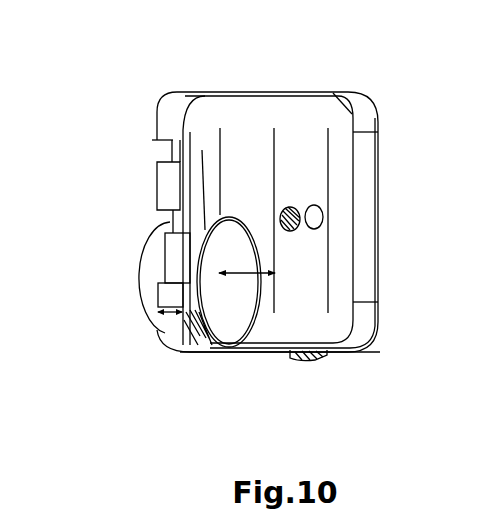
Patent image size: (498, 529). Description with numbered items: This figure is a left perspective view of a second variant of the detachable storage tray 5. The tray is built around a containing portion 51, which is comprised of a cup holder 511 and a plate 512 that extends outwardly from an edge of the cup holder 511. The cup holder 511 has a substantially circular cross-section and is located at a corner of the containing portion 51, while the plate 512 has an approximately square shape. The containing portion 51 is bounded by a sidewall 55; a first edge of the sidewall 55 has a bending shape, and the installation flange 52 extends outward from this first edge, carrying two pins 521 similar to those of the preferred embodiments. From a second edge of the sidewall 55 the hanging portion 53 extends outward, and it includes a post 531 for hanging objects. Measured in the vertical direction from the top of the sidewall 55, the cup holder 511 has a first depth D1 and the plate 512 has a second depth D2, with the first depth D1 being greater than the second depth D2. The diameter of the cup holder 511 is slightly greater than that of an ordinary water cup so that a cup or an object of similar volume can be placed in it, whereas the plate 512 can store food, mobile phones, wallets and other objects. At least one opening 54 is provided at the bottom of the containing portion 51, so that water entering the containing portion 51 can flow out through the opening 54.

The detachable storage tray 5 is at (404, 86).
The containing portion 51 is at (170, 110).
The cup holder 511 is at (208, 297).
The plate 512 is at (253, 138).
The installation flange 52 is at (197, 219).
The pins 521 is at (173, 253).
The hanging portion 53 is at (286, 352).
The post 531 is at (305, 358).
The opening 54 is at (310, 218).
The sidewall 55 is at (153, 133).
The first depth D1 is at (243, 273).
The second depth D2 is at (173, 313).